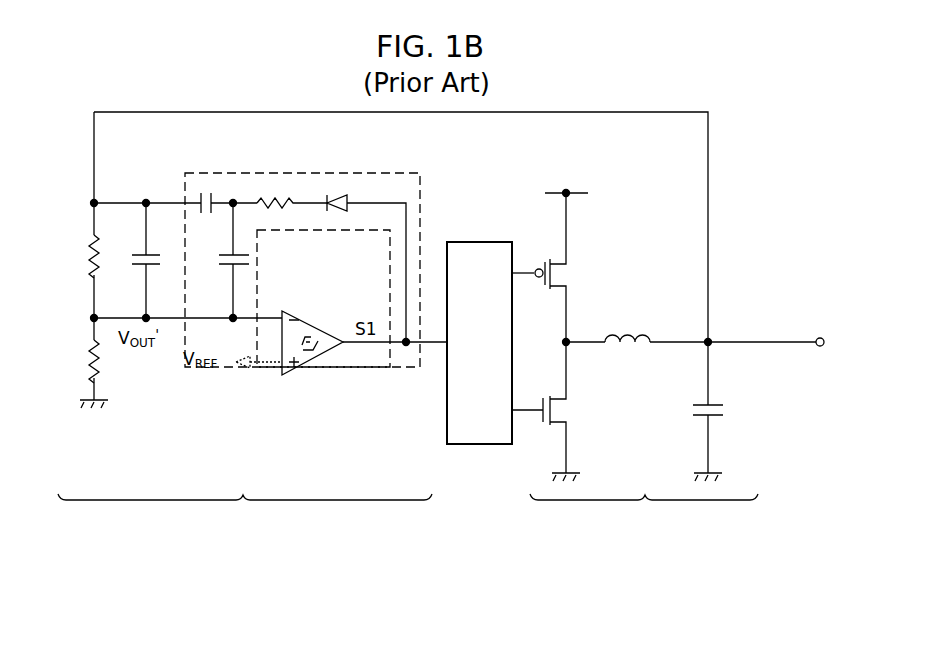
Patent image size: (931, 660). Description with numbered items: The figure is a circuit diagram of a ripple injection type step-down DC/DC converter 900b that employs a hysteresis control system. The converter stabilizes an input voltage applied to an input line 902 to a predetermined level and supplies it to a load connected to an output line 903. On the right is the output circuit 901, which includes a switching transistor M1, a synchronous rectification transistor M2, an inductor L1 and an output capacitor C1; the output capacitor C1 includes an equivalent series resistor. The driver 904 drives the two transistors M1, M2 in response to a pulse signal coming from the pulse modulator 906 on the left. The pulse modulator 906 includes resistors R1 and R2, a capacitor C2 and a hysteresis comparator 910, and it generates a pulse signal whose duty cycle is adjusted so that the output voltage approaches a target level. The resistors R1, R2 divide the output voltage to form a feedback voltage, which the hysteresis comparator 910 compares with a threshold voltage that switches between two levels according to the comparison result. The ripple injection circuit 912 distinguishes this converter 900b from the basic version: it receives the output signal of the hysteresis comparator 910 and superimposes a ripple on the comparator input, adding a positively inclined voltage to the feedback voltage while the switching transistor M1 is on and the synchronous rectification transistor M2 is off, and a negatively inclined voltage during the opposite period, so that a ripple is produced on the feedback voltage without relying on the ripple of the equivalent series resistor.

The step-down DC/DC converter 900b is at (481, 563).
The output circuit 901 is at (644, 514).
The input line 902 is at (559, 190).
The output line 903 is at (792, 340).
The driver 904 is at (476, 445).
The pulse modulator 906 is at (245, 515).
The hysteresis comparator 910 is at (316, 361).
The ripple injection circuit 912 is at (320, 173).
The resistor R1 is at (90, 265).
The resistor R2 is at (90, 355).
The output capacitor C1 is at (727, 410).
The capacitor C2 is at (139, 251).
The inductor L1 is at (630, 326).
The switching transistor M1 is at (576, 281).
The synchronous rectification transistor M2 is at (575, 402).